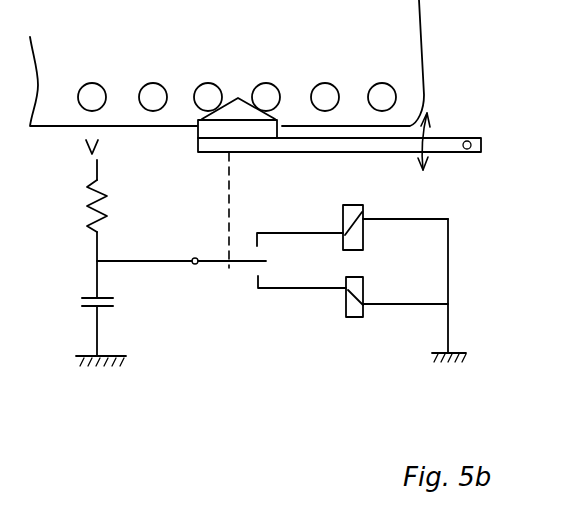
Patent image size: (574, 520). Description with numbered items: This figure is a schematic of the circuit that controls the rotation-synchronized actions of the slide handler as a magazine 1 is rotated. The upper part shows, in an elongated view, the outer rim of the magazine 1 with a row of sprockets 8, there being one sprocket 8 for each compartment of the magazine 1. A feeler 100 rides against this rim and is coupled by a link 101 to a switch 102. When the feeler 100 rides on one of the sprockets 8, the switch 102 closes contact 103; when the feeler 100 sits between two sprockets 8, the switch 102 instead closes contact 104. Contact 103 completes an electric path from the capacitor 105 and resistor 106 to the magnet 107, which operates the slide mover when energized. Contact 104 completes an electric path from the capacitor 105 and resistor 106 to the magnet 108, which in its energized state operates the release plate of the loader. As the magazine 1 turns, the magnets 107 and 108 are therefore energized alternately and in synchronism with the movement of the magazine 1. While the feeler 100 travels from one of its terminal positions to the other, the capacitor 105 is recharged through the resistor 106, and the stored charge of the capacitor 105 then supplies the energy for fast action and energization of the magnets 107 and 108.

The magazine 1 is at (395, 32).
The sprocket 8 is at (255, 82).
The feeler 100 is at (208, 128).
The link 101 is at (230, 203).
The switch 102 is at (233, 265).
The contact 103 is at (258, 247).
The contact 104 is at (257, 270).
The capacitor 105 is at (82, 306).
The resistor 106 is at (90, 212).
The magnet 107 is at (363, 213).
The magnet 108 is at (363, 300).